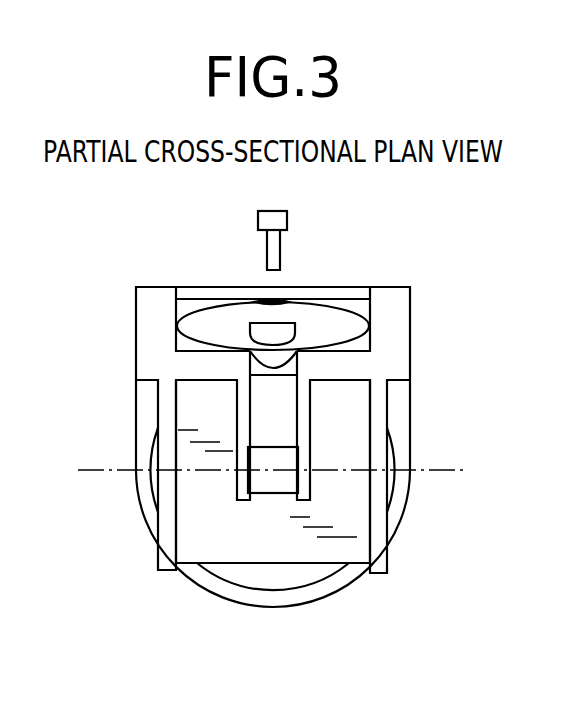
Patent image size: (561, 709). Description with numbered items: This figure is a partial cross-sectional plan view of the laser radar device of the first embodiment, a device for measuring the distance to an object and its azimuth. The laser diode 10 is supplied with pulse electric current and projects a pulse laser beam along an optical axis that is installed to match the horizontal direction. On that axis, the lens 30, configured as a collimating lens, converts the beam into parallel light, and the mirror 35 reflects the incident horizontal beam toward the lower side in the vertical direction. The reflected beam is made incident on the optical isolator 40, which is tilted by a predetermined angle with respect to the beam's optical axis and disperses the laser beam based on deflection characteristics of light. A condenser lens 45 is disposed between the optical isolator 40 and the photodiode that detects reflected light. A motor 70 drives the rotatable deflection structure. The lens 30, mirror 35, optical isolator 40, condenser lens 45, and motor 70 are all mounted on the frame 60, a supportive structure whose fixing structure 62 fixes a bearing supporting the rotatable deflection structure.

The laser diode 10 is at (281, 247).
The lens 30 is at (240, 330).
The mirror 35 is at (273, 495).
The optical isolator 40 is at (328, 551).
The condenser lens 45 is at (352, 315).
The frame 60 is at (412, 332).
The fixing structure 62 is at (198, 586).
The motor 70 is at (262, 302).